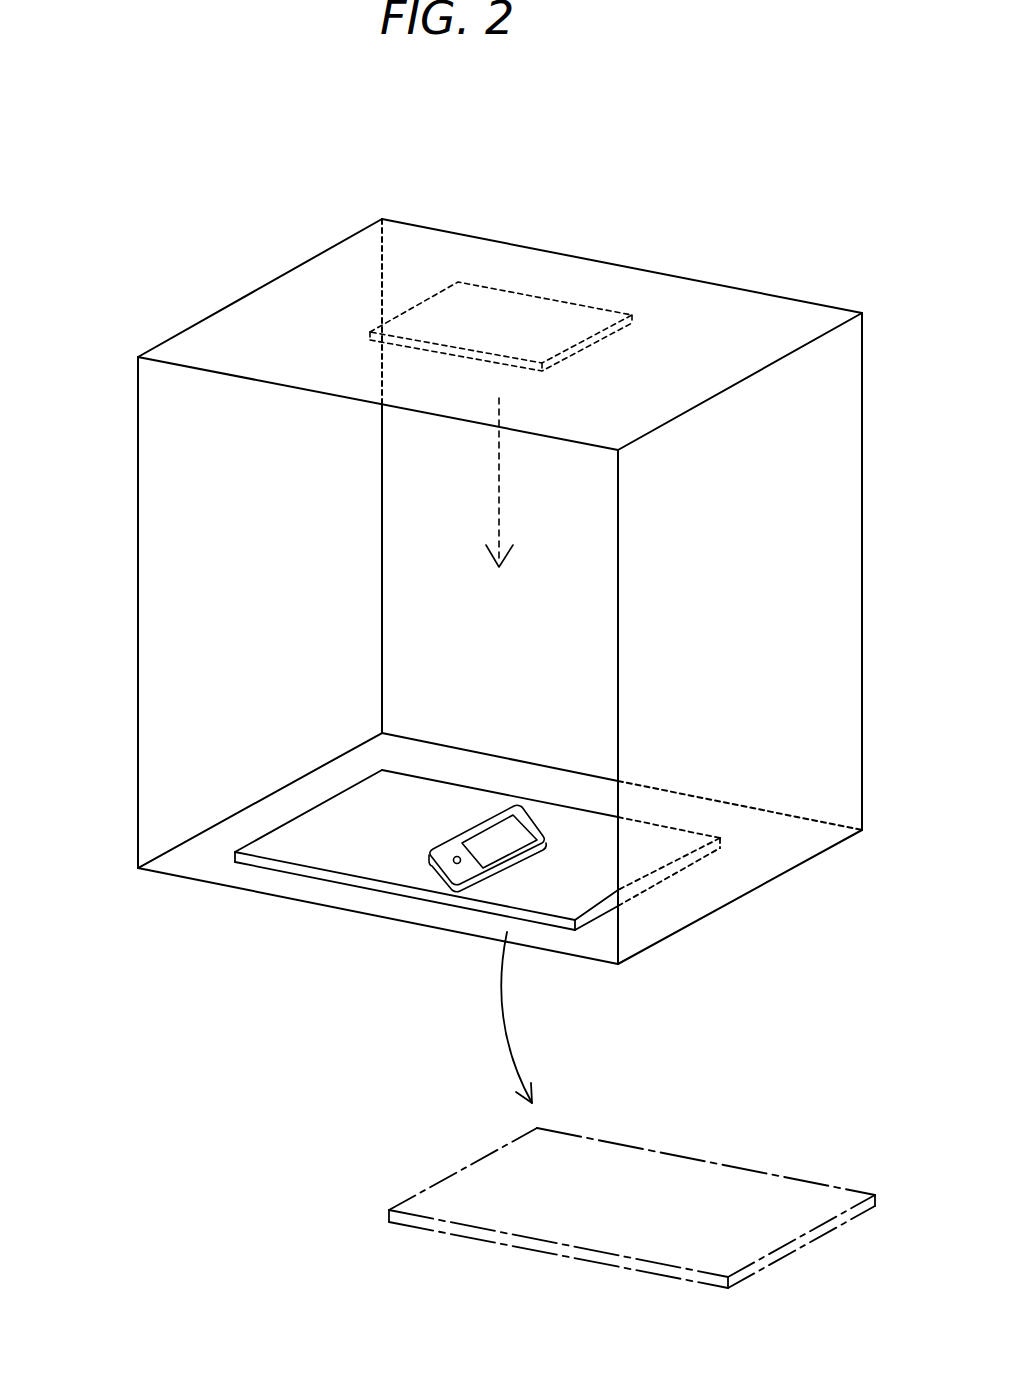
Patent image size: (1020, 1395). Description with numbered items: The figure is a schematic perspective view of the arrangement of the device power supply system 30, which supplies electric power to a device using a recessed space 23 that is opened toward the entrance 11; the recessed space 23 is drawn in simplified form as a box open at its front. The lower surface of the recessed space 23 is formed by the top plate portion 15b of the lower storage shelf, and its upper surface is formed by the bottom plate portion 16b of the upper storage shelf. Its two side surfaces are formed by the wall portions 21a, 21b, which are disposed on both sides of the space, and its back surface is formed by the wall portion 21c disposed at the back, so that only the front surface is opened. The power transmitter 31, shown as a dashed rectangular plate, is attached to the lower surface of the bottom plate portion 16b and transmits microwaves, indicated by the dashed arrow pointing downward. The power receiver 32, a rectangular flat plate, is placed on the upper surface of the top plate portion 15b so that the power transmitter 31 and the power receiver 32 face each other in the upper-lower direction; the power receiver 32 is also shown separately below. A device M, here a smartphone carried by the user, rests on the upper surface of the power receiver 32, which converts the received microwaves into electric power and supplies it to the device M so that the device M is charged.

The device power supply system 30 is at (731, 276).
The power transmitter 31 is at (478, 305).
The power receiver 32 is at (348, 843).
The recessed space 23 is at (537, 668).
The entrance 11 is at (412, 1063).
The device M is at (480, 840).
The bottom plate portion 16b is at (180, 363).
The wall portion 21c is at (415, 478).
The wall portion 21b is at (195, 590).
The wall portion 21a is at (617, 867).
The top plate portion 15b is at (223, 875).